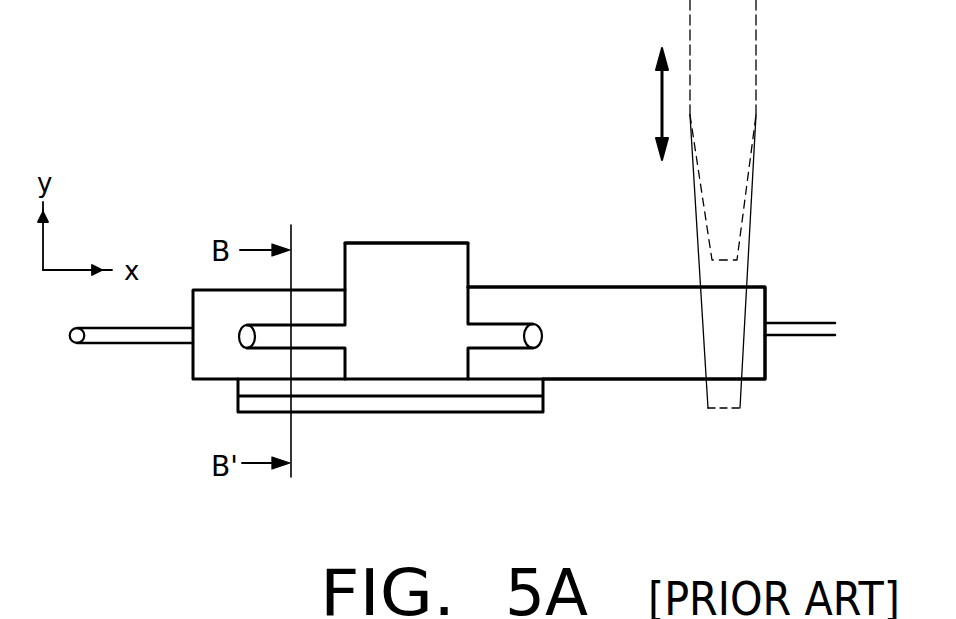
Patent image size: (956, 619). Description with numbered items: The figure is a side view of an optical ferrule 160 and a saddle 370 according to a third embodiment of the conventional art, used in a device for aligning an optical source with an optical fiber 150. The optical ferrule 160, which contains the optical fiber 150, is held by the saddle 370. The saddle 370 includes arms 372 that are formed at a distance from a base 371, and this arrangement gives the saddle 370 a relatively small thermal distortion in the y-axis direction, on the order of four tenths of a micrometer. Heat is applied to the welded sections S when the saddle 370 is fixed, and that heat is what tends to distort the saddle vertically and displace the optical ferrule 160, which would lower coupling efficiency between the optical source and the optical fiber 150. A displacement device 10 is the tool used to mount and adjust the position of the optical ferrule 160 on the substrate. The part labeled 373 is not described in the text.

The displacement device 10 is at (753, 77).
The optical fiber 150 is at (795, 320).
The optical ferrule 160 is at (660, 367).
The saddle 370 is at (403, 273).
The base 371 is at (488, 400).
The arms 372 is at (492, 337).
The holder body 373 is at (360, 258).
The welded sections S is at (247, 340).